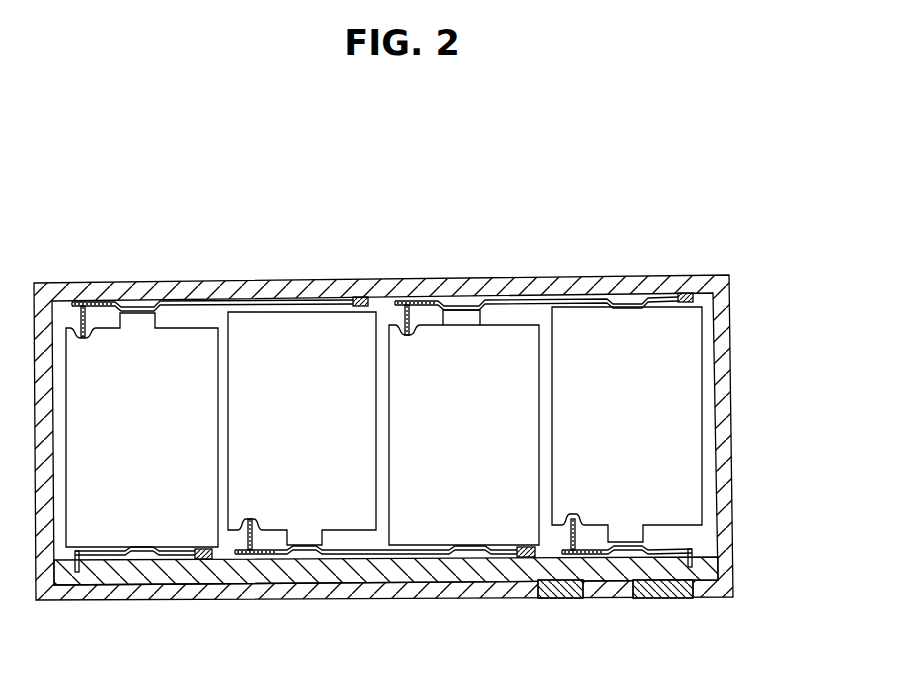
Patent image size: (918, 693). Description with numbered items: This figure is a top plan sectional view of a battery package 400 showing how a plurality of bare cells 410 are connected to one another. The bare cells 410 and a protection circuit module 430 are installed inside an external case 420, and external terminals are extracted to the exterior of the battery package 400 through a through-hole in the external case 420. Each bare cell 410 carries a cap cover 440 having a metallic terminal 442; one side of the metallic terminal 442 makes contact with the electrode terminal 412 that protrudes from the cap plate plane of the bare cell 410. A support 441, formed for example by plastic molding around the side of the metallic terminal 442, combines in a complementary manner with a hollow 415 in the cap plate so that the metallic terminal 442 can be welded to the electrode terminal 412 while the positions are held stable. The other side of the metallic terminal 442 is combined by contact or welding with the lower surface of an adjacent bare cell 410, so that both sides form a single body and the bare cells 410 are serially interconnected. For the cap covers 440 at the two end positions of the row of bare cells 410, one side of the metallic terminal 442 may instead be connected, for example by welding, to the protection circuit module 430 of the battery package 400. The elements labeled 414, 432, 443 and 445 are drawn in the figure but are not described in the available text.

The battery package 400 is at (714, 234).
The bare cell 410 is at (693, 350).
The electrode terminal 412 is at (463, 318).
The upper bus bar 414 is at (580, 303).
The hollow 415 is at (416, 334).
The external case 420 is at (723, 457).
The protection circuit module 430 is at (713, 570).
The heat dissipation member 432 is at (568, 600).
The cap cover 440 is at (207, 254).
The support 441 is at (69, 273).
The metallic terminal 442 is at (228, 302).
The lower bus bar 443 is at (173, 557).
The lower bus bar end portion 445 is at (682, 544).